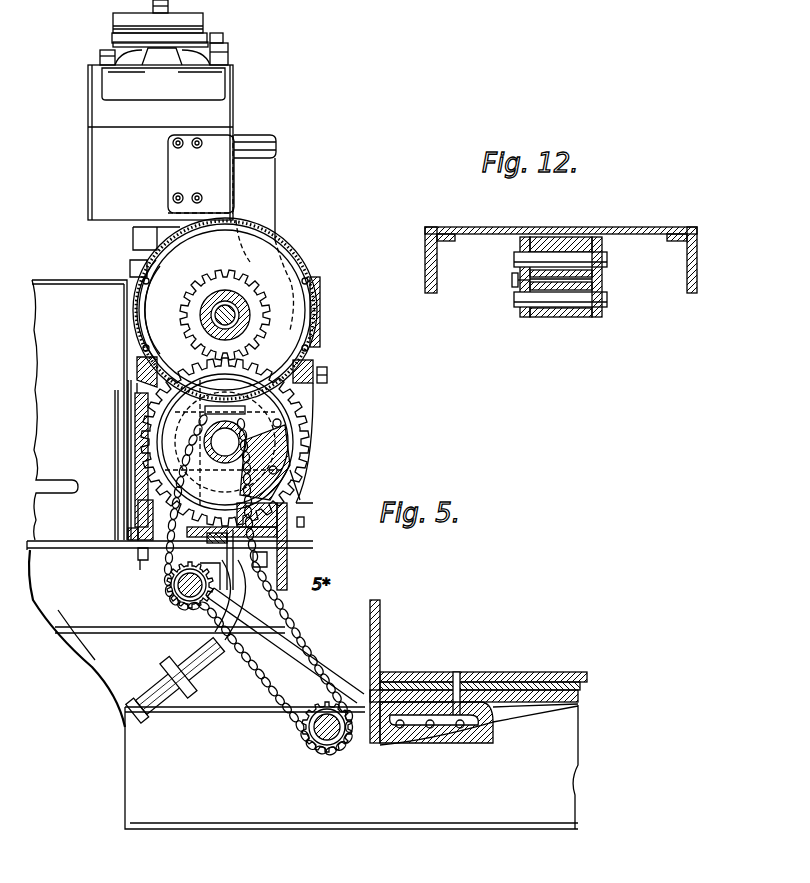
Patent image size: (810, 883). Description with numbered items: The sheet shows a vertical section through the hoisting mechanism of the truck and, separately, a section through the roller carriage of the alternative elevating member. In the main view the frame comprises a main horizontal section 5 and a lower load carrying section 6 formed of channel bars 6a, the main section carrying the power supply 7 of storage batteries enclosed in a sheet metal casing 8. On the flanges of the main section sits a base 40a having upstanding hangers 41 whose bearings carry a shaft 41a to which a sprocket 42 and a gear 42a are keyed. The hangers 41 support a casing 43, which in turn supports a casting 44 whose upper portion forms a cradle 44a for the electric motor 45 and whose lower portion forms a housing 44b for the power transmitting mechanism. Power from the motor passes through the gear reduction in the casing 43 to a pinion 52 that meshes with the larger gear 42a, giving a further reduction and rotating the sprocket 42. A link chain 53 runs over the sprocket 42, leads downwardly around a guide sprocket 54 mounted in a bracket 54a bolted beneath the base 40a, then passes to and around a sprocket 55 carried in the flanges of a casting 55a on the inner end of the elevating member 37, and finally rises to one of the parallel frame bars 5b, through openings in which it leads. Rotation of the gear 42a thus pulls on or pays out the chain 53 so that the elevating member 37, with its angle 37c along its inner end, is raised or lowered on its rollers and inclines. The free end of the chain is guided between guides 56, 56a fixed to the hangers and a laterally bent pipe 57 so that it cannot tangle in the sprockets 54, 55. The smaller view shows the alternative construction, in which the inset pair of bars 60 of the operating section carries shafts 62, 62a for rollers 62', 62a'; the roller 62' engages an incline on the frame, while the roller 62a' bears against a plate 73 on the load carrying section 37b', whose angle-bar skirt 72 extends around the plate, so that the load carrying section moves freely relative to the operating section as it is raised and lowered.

In FIG. 5, the electric motor 45 is at (233, 95).
In FIG. 5, the casting 44 is at (276, 167).
In FIG. 5, the cradle 44a is at (279, 200).
In FIG. 5, the casing 43 is at (312, 275).
In FIG. 5, the housing 44b is at (320, 338).
In FIG. 5, the pinion 52 is at (236, 284).
In FIG. 5, the hanger 41 is at (238, 312).
In FIG. 5, the sheet metal casing 8 is at (80, 284).
In FIG. 5, the sprocket 42 is at (225, 442).
In FIG. 5, the gear 42a is at (145, 443).
In FIG. 5, the shaft 41a is at (219, 423).
In FIG. 5, the guide 56 is at (140, 492).
In FIG. 5, the guide 56a is at (300, 490).
In FIG. 5, the base 40a is at (288, 548).
In FIG. 5, the bracket 54a is at (138, 560).
In FIG. 5, the guide sprocket 54 is at (170, 600).
In FIG. 5, the chain 53 is at (305, 650).
In FIG. 5, the laterally bent pipe 57 is at (147, 717).
In FIG. 5, the sprocket 55 is at (308, 702).
In FIG. 5, the main horizontal section 5 is at (52, 616).
In FIG. 5, the parallel bar 5b is at (73, 638).
In FIG. 5, the power supply 7 is at (97, 660).
In FIG. 5, the load carrying section 6 is at (351, 780).
In FIG. 5, the channel bar 6a is at (192, 826).
In FIG. 5, the angle 37c is at (382, 628).
In FIG. 5, the elevating member 37 is at (460, 672).
In FIG. 5, the casting 55a is at (428, 742).
In FIG. 12, the load carrying section 37b' is at (561, 218).
In FIG. 12, the skirt 72 is at (437, 294).
In FIG. 12, the roller 62a' is at (589, 226).
In FIG. 12, the plate 73 is at (513, 240).
In FIG. 12, the shaft 62a is at (580, 275).
In FIG. 12, the bar 60 is at (607, 287).
In FIG. 12, the shaft 62 is at (560, 331).
In FIG. 12, the roller 62' is at (587, 295).